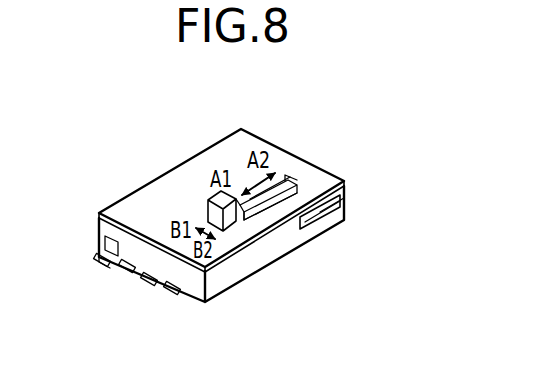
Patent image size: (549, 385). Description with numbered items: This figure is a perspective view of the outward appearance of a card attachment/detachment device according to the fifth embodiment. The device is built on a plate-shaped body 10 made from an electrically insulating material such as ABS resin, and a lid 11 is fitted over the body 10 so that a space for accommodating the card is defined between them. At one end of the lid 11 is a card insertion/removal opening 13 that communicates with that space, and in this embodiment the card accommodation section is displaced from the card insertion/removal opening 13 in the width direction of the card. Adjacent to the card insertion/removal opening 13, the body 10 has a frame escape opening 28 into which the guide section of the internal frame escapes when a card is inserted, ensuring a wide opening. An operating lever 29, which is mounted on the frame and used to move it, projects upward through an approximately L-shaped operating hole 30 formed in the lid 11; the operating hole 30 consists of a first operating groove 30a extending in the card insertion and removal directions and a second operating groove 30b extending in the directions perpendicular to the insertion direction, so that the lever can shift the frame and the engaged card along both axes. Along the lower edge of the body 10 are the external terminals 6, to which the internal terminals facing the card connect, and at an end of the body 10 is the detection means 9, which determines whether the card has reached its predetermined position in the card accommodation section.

The external terminals 6 is at (142, 289).
The detection means 9 is at (98, 263).
The plate-shaped body 10 is at (228, 273).
The lid 11 is at (240, 138).
The card insertion/removal opening 13 is at (346, 190).
The frame escape opening 28 is at (330, 215).
The operating lever 29 is at (212, 193).
The operating hole 30 is at (282, 180).
The first operating groove 30a is at (296, 222).
The second operating groove 30b is at (271, 236).